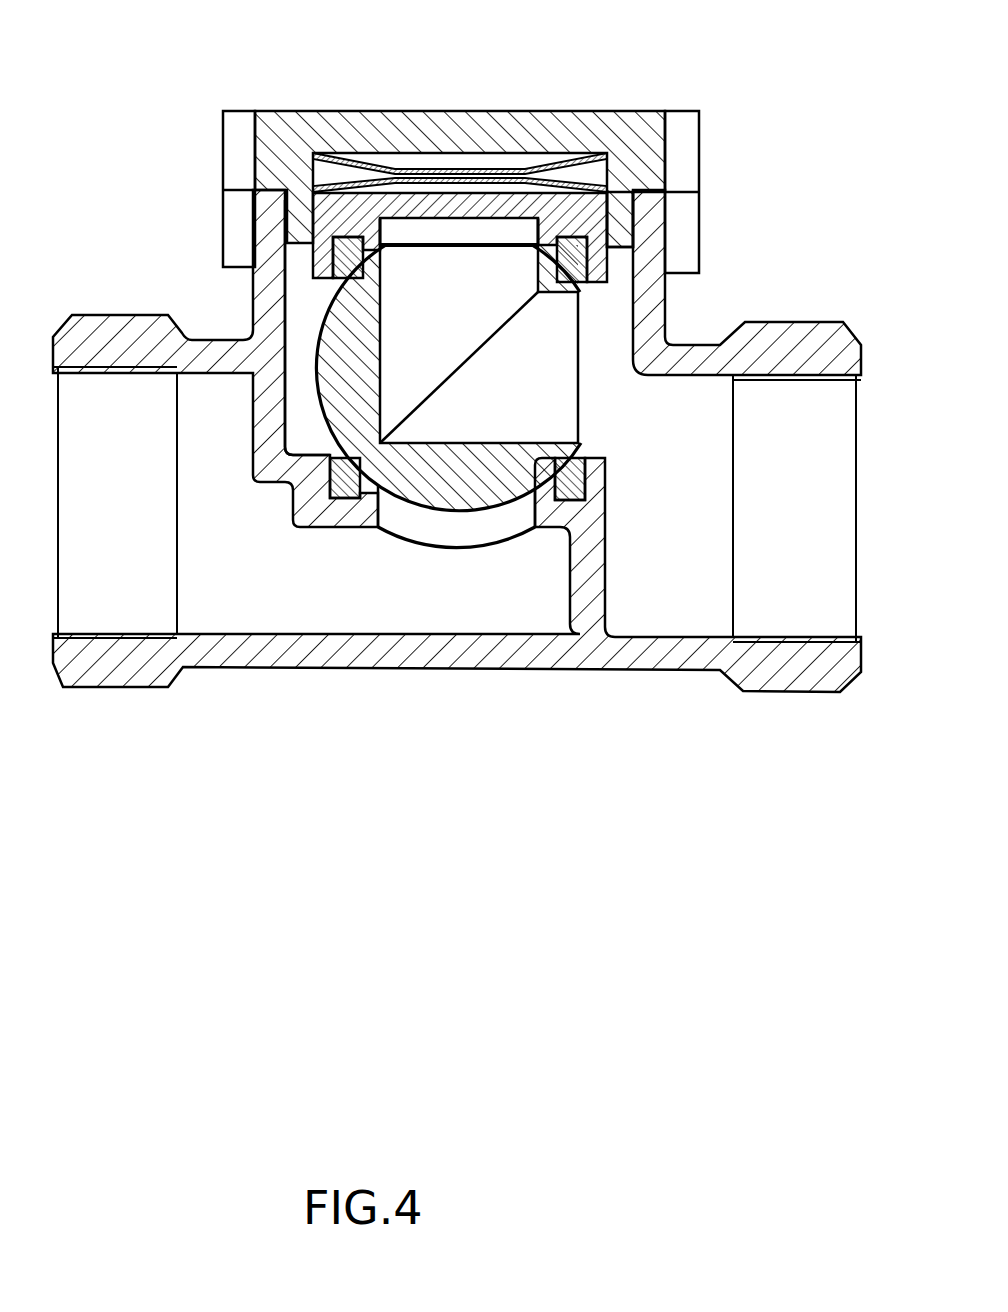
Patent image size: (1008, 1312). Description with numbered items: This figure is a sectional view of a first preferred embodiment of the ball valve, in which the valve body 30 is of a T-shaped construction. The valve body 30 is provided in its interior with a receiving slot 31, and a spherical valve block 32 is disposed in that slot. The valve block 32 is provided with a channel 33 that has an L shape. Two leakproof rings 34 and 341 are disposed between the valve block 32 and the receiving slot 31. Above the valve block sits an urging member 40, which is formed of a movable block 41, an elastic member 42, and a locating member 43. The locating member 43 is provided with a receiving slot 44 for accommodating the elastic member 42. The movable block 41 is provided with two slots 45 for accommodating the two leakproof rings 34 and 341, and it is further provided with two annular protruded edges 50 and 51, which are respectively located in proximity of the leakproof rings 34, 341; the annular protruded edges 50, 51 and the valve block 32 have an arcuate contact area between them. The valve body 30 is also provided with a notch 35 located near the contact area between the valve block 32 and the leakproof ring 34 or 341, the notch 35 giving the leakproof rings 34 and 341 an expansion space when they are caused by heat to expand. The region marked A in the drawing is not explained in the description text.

The valve body 30 is at (357, 662).
The receiving slot 31 is at (305, 318).
The valve block 32 is at (333, 407).
The channel 33 is at (458, 445).
The leakproof ring 34 is at (590, 262).
The leakproof ring 341 is at (567, 487).
The notch 35 is at (347, 500).
The urging member 40 is at (481, 100).
The movable block 41 is at (313, 241).
The elastic member 42 is at (352, 155).
The locating member 43 is at (288, 111).
The receiving slot 44 is at (596, 155).
The slot 45 is at (372, 278).
The annular protruded edge 50 is at (540, 255).
The annular protruded edge 51 is at (548, 478).
The clearance gap A is at (432, 262).